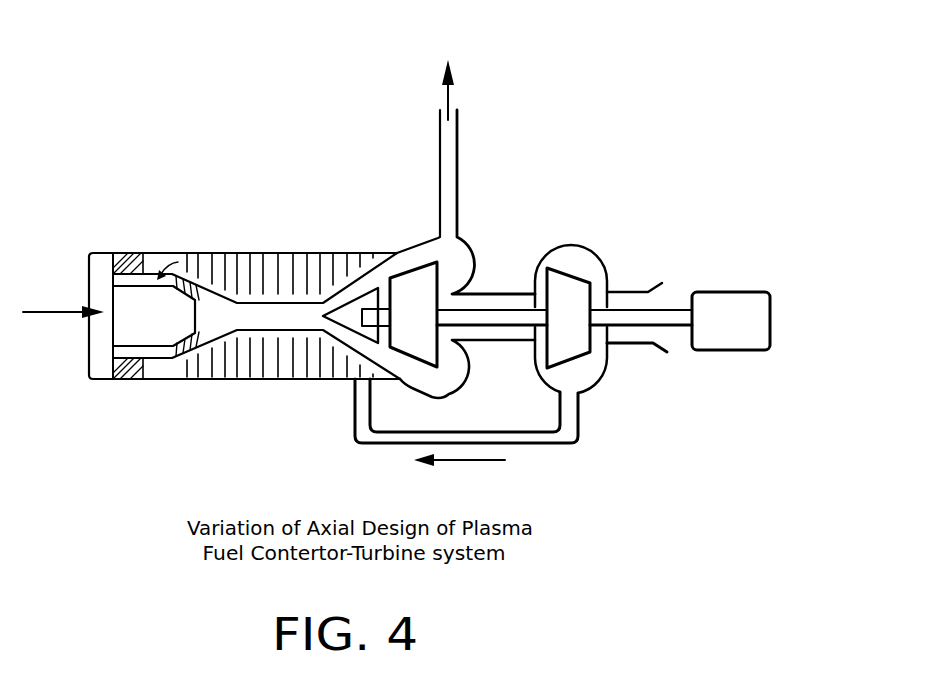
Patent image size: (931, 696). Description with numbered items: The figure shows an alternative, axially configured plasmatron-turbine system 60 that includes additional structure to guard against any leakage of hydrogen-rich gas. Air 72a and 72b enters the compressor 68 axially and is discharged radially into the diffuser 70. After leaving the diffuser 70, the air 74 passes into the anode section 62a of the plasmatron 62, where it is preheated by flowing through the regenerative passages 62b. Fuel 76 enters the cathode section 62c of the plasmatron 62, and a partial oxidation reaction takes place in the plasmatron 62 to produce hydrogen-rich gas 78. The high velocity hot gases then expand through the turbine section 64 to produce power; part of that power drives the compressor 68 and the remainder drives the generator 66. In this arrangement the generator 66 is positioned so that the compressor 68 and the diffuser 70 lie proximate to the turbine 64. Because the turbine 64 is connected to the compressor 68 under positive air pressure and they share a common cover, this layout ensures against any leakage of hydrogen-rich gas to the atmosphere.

The axial plasma fuel converter-turbine system 60 is at (312, 96).
The plasmatron 62 is at (252, 234).
The anode section 62a is at (305, 376).
The regenerative passages 62b is at (248, 362).
The cathode section 62c is at (153, 337).
The turbine section 64 is at (418, 272).
The generator 66 is at (733, 300).
The compressor 68 is at (562, 277).
The diffuser 70 is at (590, 265).
The air 72a is at (705, 266).
The air 72b is at (670, 341).
The air 74 is at (466, 435).
The fuel 76 is at (50, 311).
The hydrogen-rich gas 78 is at (447, 95).